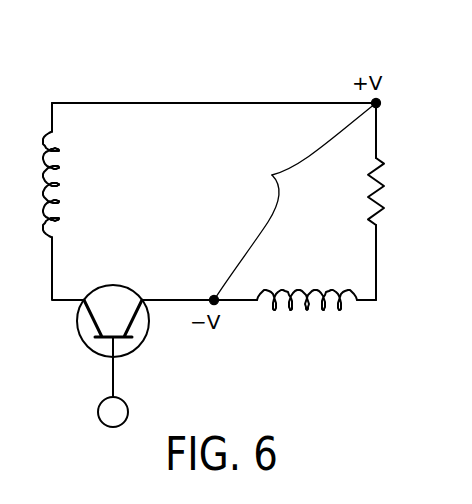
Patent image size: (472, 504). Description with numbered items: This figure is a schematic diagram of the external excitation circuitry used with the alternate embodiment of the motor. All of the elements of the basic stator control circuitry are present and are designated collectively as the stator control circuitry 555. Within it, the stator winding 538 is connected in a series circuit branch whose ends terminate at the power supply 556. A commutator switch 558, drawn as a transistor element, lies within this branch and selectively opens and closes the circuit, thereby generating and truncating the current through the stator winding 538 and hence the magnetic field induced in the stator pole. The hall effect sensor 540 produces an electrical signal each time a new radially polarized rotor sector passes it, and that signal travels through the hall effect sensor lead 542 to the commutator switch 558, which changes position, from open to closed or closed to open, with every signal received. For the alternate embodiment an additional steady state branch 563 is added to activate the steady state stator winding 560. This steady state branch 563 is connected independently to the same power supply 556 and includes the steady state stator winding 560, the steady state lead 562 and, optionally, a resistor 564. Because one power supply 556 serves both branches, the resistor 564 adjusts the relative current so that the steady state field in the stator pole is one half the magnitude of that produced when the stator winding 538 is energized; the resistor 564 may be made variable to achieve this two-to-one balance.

The stator control circuitry 555 is at (213, 77).
The stator winding 538 is at (59, 185).
The power supply 556 is at (272, 175).
The commutator switch 558 is at (139, 276).
The hall effect sensor 540 is at (127, 405).
The hall effect sensor lead 542 is at (112, 377).
The steady state stator winding 560 is at (305, 309).
The steady state lead 562 is at (376, 270).
The steady state branch 563 is at (395, 280).
The resistor 564 is at (368, 208).